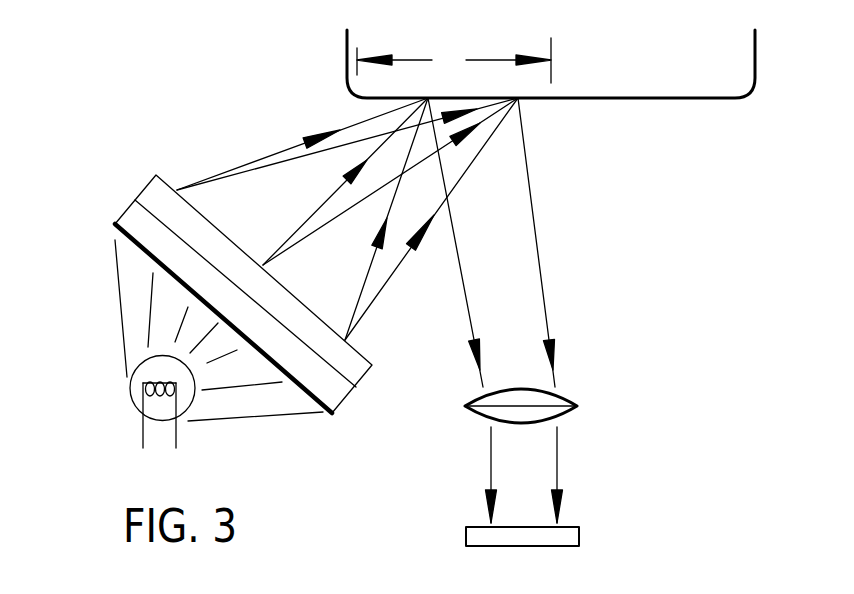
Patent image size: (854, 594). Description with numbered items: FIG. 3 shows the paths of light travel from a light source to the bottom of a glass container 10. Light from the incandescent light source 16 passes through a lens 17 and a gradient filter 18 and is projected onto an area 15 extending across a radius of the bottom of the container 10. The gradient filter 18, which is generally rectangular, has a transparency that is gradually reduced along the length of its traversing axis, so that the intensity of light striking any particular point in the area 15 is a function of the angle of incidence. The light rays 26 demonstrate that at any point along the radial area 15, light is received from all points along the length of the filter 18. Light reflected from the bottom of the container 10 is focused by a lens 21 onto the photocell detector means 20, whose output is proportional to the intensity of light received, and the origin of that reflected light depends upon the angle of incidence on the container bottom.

The container 10 is at (757, 75).
The area 15 is at (454, 60).
The light source 16 is at (143, 433).
The lens 17 is at (126, 211).
The gradient filter 18 is at (148, 189).
The photocell detector means 20 is at (579, 536).
The lens 21 is at (563, 392).
The light rays 26 is at (414, 275).